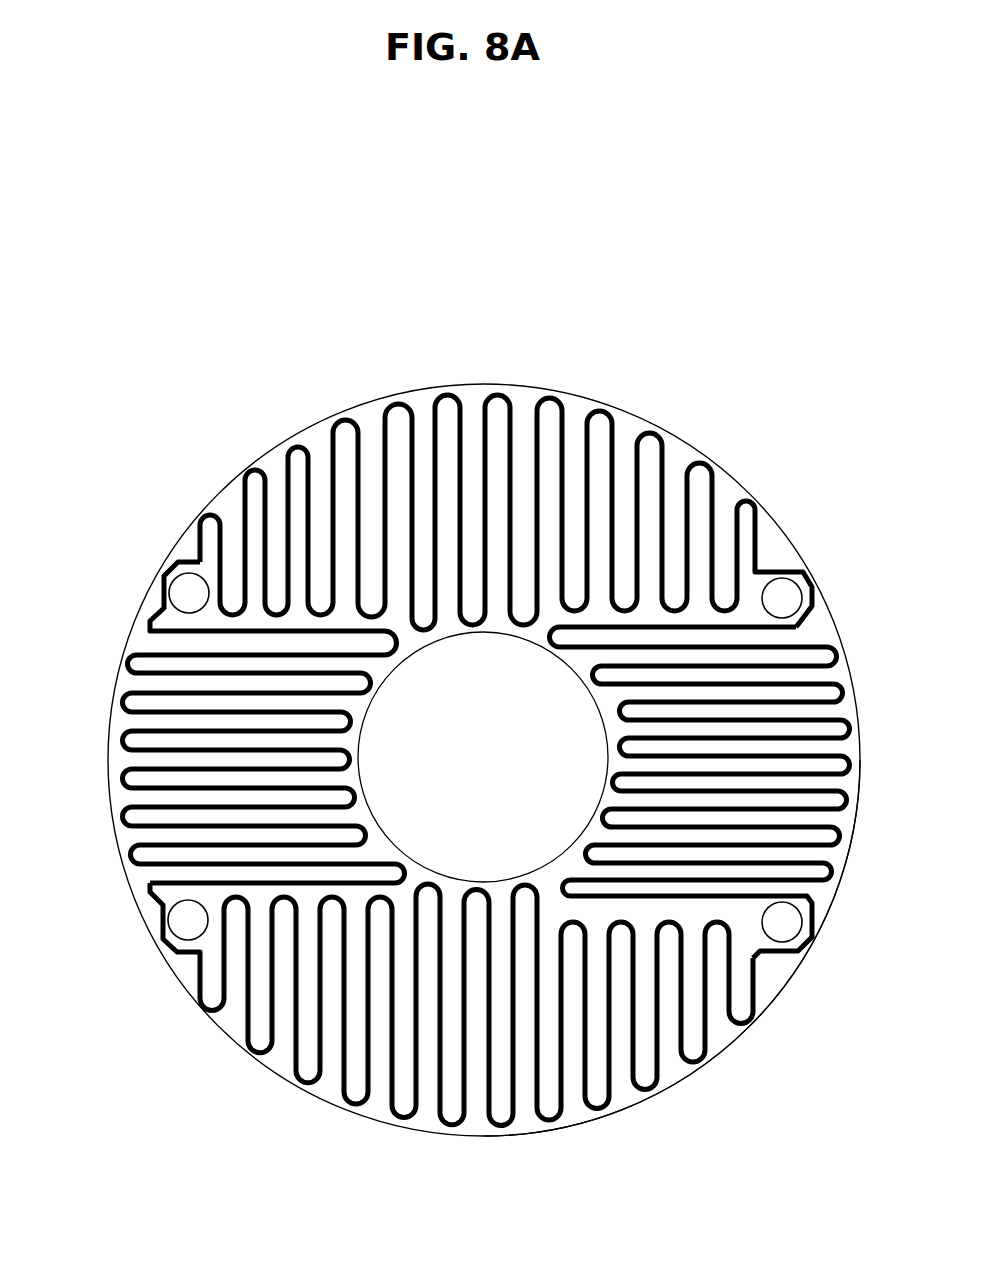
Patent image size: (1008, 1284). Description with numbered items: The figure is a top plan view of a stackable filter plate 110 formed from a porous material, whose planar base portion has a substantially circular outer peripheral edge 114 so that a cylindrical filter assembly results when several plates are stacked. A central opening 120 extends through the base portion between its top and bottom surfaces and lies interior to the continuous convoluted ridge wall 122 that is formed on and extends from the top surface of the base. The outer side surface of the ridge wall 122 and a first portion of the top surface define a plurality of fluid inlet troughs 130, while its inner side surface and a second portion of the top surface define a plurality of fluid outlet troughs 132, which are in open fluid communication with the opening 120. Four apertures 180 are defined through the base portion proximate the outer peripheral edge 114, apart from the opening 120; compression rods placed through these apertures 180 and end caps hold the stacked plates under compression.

The filter plate 110 is at (747, 409).
The outer peripheral edge 114 is at (843, 885).
The opening 120 is at (455, 705).
The convoluted ridge wall 122 is at (261, 474).
The fluid inlet troughs 130 is at (129, 683).
The fluid outlet troughs 132 is at (160, 853).
The apertures 180 is at (787, 612).